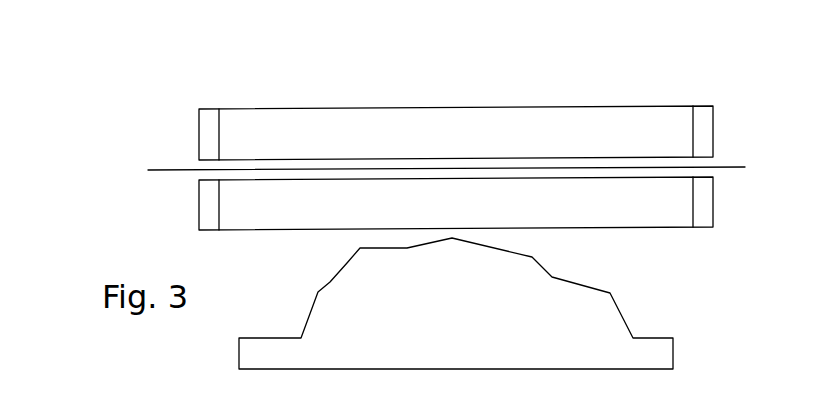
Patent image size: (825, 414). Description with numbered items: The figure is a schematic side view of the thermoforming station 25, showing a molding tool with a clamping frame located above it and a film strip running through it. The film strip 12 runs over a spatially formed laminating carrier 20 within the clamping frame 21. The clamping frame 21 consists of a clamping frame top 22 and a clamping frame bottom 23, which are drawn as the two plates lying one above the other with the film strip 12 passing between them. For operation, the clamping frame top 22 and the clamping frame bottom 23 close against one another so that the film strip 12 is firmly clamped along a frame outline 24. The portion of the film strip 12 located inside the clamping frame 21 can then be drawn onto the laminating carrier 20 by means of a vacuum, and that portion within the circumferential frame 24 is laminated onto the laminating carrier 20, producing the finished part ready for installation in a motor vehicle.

The film strip 12 is at (600, 167).
The laminating carrier 20 is at (603, 325).
The clamping frame 21 is at (493, 105).
The clamping frame top 22 is at (350, 133).
The clamping frame bottom 23 is at (273, 213).
The frame outline 24 is at (703, 153).
The thermoforming station 25 is at (250, 83).